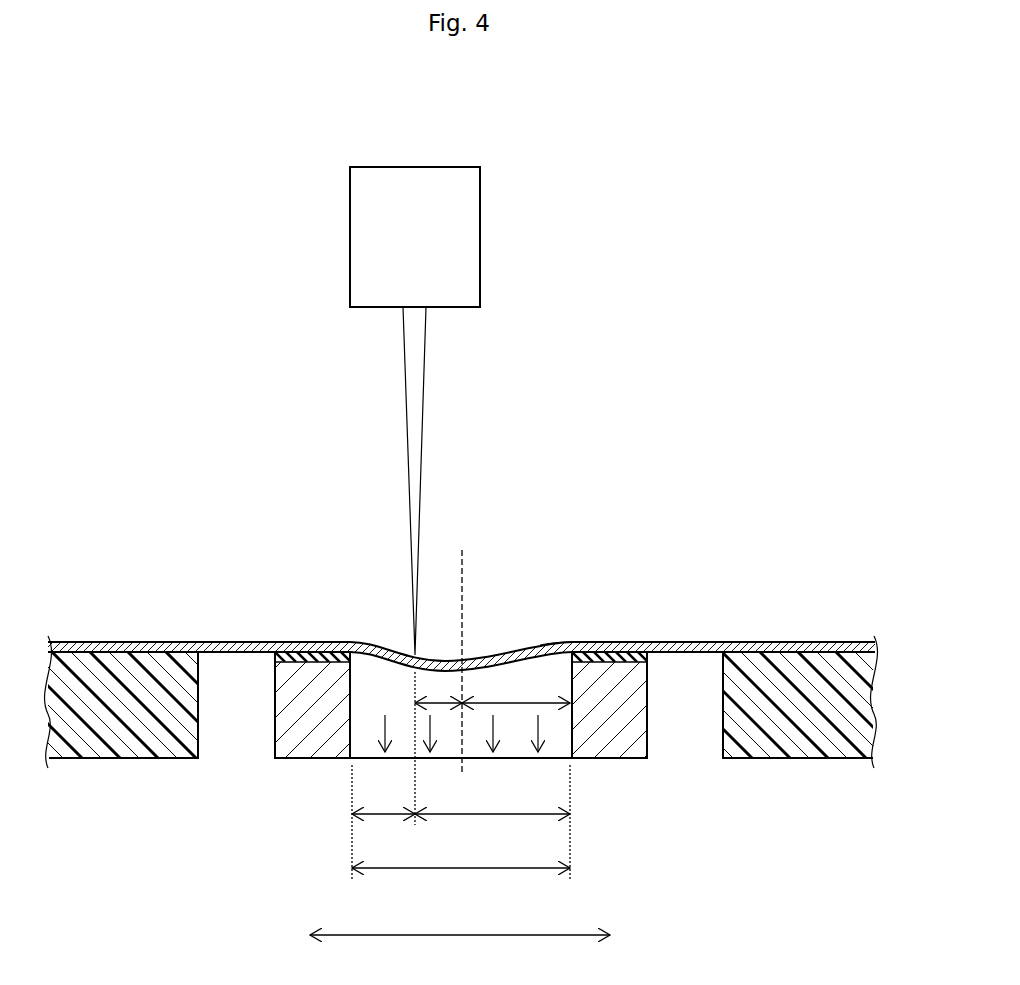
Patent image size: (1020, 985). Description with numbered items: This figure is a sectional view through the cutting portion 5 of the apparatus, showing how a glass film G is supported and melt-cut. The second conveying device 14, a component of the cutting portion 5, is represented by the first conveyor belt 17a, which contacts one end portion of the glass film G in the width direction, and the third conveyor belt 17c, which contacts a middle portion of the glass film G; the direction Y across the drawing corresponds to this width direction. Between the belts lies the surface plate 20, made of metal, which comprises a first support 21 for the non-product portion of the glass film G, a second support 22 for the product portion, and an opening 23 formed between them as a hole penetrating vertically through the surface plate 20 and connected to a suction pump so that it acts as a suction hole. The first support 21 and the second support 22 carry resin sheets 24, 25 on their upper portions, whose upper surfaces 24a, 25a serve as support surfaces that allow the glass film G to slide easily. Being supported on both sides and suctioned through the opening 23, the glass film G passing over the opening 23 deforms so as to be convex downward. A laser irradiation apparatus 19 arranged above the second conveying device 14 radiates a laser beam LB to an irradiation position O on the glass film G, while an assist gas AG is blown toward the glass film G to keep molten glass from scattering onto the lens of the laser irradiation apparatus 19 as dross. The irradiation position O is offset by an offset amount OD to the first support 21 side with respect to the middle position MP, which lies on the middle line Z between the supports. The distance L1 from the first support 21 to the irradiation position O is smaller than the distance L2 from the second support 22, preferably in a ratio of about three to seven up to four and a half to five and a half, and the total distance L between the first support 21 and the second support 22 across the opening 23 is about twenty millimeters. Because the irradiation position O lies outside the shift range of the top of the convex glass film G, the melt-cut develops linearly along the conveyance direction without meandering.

The cutting portion 5 is at (579, 188).
The laser irradiation apparatus 19 is at (481, 237).
The laser beam LB is at (425, 389).
The assist gas AG is at (392, 565).
The middle line Z is at (463, 573).
The glass film G is at (701, 640).
The second conveying device 14 is at (480, 744).
The first conveyor belt 17a is at (125, 757).
The third conveyor belt 17c is at (770, 754).
The surface plate 20 is at (310, 770).
The first support 21 is at (285, 725).
The second support 22 is at (616, 746).
The opening 23 is at (557, 668).
The resin sheet 24 is at (325, 655).
The upper surface of the resin sheet 24a is at (303, 652).
The resin sheet 25 is at (624, 655).
The upper surface of the resin sheet 25a is at (604, 652).
The irradiation position O is at (410, 656).
The middle position MP is at (463, 662).
The offset amount OD is at (438, 748).
The distance between the first support and the irradiation position L1 is at (383, 822).
The distance between the second support and the irradiation position L2 is at (492, 822).
The distance between the first support and the second support L is at (461, 855).
The Y direction Y is at (460, 922).